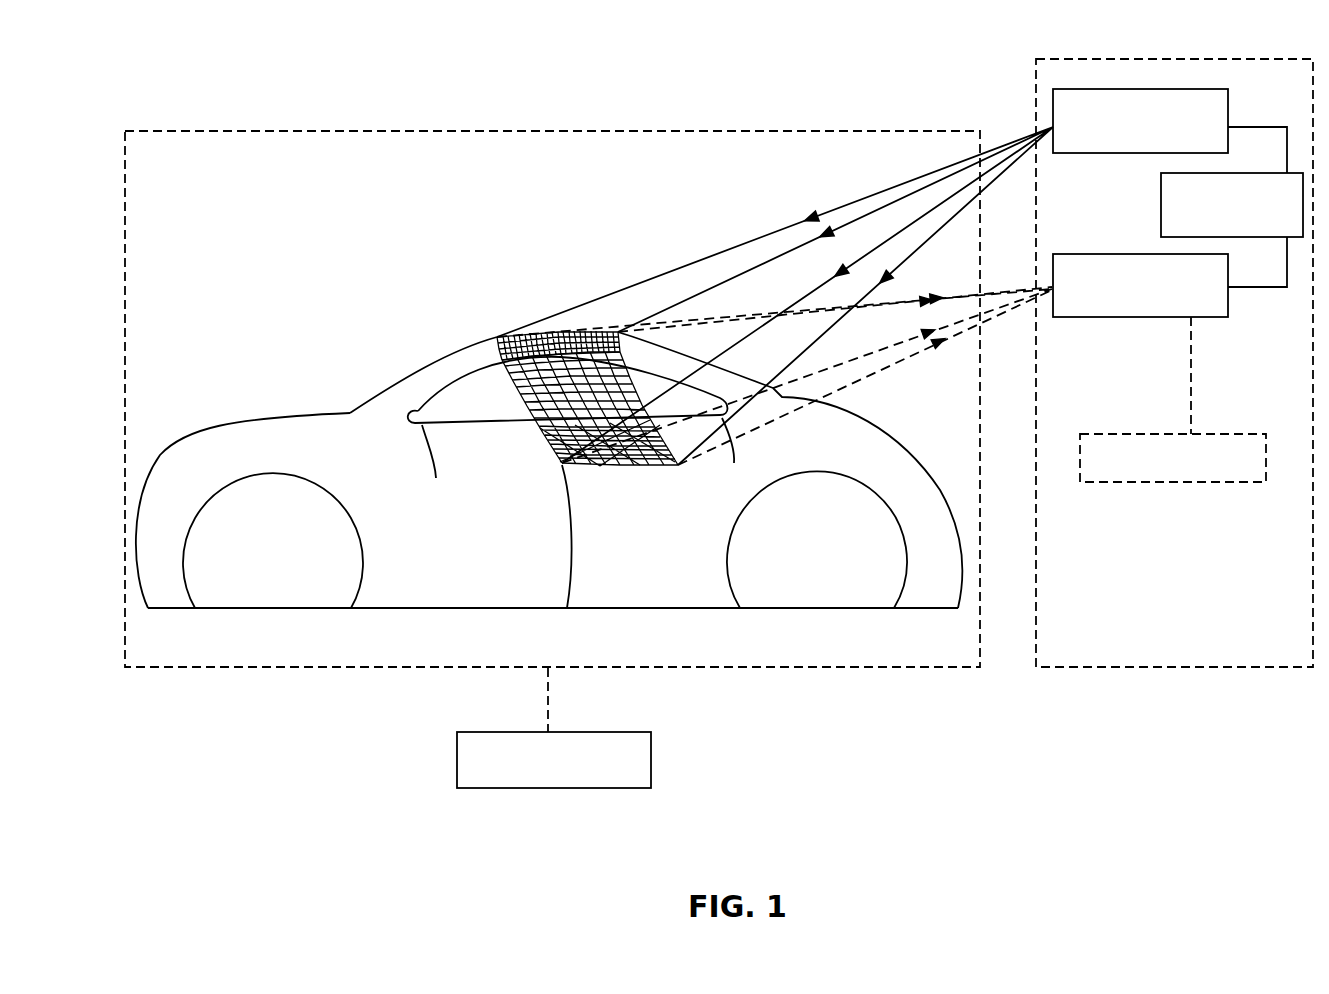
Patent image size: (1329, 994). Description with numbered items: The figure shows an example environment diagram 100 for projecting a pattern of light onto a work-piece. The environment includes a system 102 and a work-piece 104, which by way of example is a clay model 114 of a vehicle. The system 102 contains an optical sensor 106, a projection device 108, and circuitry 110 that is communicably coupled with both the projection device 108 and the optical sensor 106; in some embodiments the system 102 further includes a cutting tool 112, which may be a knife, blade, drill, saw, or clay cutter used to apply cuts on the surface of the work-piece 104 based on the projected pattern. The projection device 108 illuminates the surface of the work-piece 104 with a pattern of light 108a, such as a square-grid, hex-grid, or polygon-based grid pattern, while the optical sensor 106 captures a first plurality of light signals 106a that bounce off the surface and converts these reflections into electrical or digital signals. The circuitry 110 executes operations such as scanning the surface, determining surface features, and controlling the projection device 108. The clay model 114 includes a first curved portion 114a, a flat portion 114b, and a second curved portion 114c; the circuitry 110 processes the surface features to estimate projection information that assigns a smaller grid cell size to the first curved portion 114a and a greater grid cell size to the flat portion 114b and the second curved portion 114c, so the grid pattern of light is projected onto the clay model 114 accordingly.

The example environment diagram 100 is at (200, 64).
The system 102 is at (1174, 363).
The work-piece 104 is at (554, 728).
The optical sensor 106 is at (1140, 285).
The first plurality of light signals 106a is at (1013, 290).
The projection device 108 is at (1140, 121).
The pattern of light 108a is at (567, 314).
The circuitry 110 is at (1232, 207).
The cutting tool 112 is at (1173, 399).
The clay model 114 is at (552, 399).
The first curved portion 114a is at (484, 343).
The flat portion 114b is at (499, 388).
The second curved portion 114c is at (532, 443).